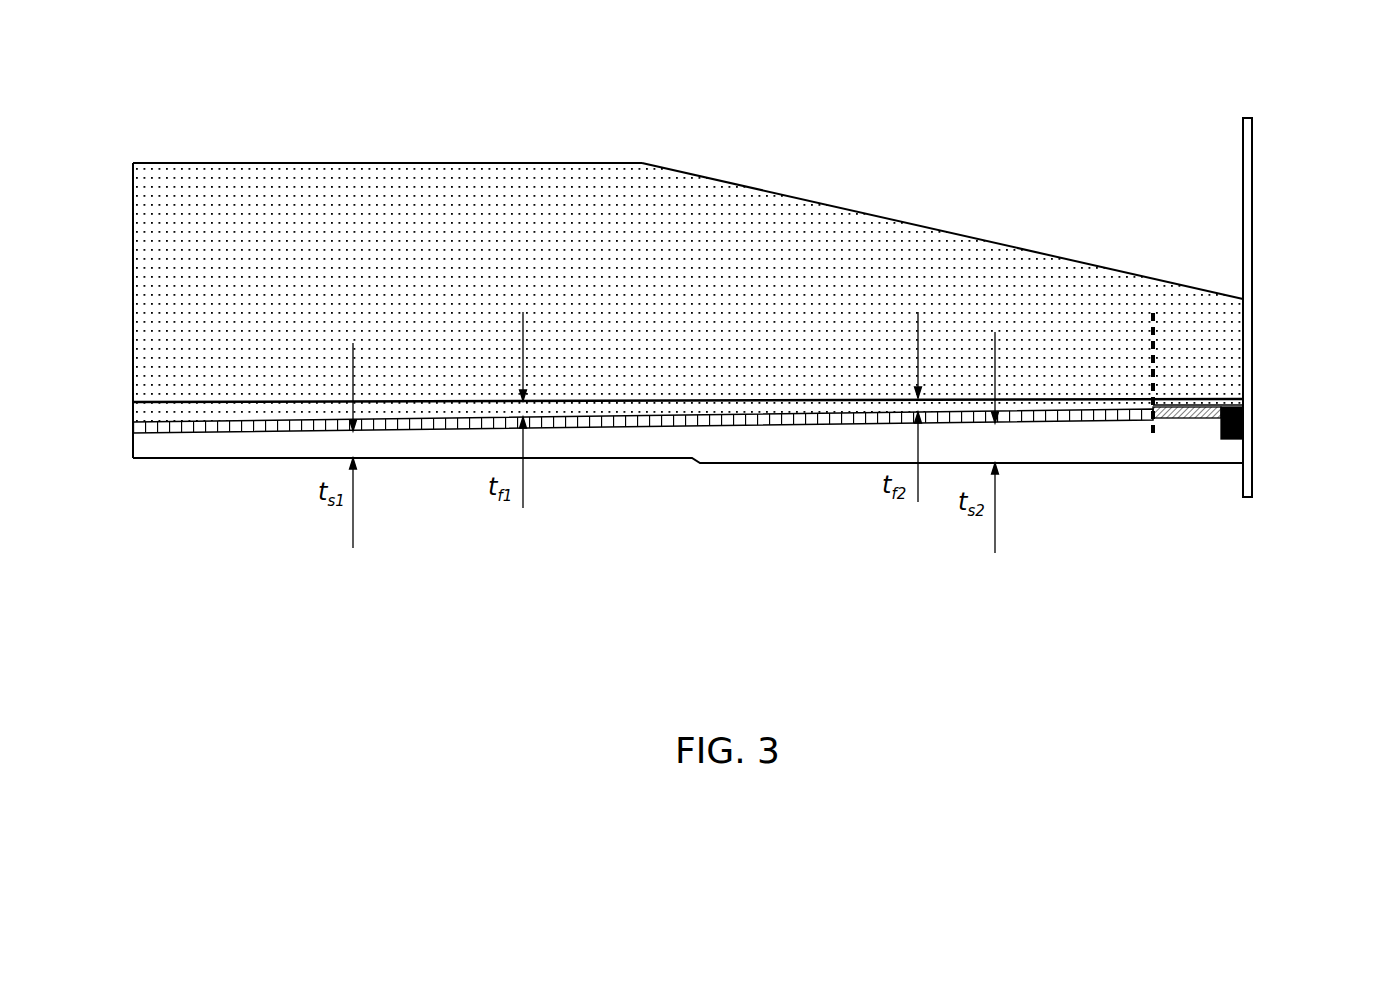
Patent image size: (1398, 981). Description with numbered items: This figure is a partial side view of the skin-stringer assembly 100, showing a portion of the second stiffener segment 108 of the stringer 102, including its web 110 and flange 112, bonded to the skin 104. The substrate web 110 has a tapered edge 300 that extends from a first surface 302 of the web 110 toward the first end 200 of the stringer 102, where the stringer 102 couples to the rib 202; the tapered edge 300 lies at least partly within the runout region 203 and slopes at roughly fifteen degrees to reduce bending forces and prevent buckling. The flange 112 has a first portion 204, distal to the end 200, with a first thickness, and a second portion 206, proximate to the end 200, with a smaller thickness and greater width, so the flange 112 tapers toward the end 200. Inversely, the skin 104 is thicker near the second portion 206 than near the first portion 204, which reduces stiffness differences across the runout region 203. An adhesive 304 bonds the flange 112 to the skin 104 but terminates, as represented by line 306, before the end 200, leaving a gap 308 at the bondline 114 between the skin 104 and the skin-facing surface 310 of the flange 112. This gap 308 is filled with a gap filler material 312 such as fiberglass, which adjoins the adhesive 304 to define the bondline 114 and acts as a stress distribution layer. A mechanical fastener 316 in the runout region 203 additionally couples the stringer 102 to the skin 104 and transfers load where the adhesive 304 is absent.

The skin-stringer assembly 100 is at (74, 310).
The stringer 102 is at (387, 141).
The skin 104 is at (687, 465).
The second stiffener segment 108 is at (798, 99).
The web 110 is at (868, 176).
The flange 112 is at (707, 376).
The bondline 114 is at (837, 442).
The first end of the stringer 200 is at (1269, 257).
The rib 202 is at (1295, 302).
The runout region 203 is at (1115, 229).
The first portion of the flange 204 is at (248, 375).
The second portion of the flange 206 is at (688, 353).
The tapered edge 300 is at (942, 231).
The first surface 302 is at (688, 277).
The adhesive 304 is at (643, 435).
The line 306 is at (1104, 373).
The gap 308 is at (1123, 439).
The skin-facing surface 310 is at (1237, 388).
The gap filler material 312 is at (1130, 457).
The mechanical fastener 316 is at (1304, 452).